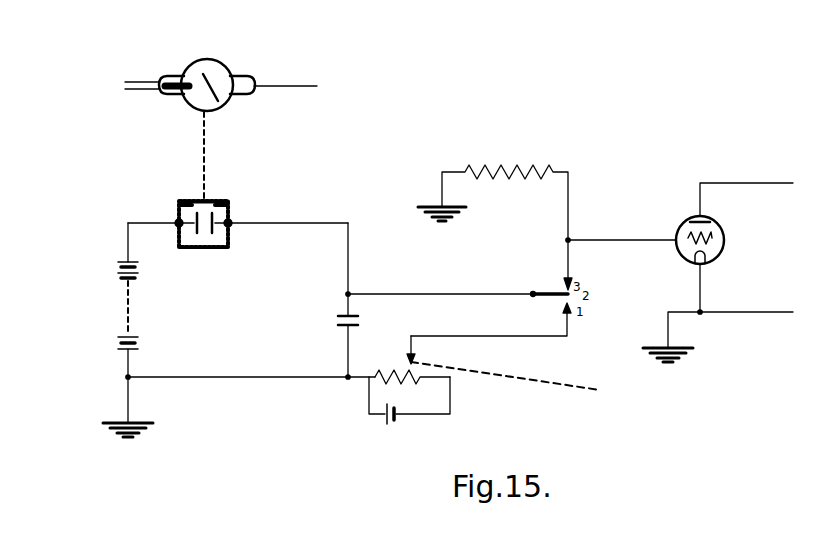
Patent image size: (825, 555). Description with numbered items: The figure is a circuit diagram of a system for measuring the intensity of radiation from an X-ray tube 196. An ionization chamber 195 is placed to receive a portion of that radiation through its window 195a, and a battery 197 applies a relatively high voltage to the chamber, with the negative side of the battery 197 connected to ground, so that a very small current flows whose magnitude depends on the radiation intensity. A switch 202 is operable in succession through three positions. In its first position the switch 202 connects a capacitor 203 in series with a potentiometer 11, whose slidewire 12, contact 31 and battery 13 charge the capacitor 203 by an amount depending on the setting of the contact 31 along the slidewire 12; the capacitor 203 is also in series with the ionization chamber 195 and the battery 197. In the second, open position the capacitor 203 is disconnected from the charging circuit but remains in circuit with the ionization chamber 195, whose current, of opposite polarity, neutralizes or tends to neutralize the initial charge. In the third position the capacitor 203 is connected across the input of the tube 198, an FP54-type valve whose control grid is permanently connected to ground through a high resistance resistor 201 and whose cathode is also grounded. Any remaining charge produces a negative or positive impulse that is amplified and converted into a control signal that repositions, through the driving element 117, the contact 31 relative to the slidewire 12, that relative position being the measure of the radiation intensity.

The X-ray tube 196 is at (222, 68).
The ionization chamber 195 is at (223, 221).
The window 195a is at (200, 200).
The battery 197 is at (122, 303).
The capacitor 203 is at (337, 322).
The slidewire 12 is at (388, 370).
The potentiometer 11 is at (409, 395).
The battery 13 is at (389, 422).
The contact 31 is at (405, 352).
The driving element 117 is at (552, 385).
The switch 202 is at (549, 291).
The high resistance resistor 201 is at (499, 170).
The tube 198 is at (723, 240).